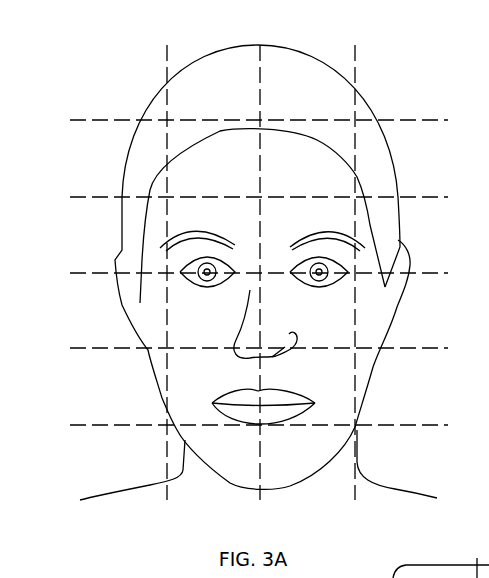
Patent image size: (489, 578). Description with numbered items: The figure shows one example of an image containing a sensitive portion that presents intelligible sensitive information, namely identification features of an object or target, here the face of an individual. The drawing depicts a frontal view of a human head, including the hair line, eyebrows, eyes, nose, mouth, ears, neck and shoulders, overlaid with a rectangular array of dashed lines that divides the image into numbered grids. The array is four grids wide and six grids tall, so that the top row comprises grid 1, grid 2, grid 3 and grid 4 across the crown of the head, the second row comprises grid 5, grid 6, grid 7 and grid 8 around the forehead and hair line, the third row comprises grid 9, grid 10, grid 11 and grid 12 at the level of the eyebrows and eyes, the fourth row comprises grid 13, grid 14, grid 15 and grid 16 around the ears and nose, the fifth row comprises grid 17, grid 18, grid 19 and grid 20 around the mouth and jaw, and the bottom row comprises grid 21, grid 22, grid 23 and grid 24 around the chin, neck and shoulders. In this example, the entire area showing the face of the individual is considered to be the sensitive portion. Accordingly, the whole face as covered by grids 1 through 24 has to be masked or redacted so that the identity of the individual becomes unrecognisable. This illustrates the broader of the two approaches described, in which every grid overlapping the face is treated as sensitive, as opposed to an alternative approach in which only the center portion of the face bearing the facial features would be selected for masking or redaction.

The grid 1 is at (118, 82).
The grid 2 is at (213, 82).
The grid 3 is at (307, 82).
The grid 4 is at (401, 82).
The grid 5 is at (118, 158).
The grid 6 is at (213, 158).
The grid 7 is at (307, 158).
The grid 8 is at (401, 158).
The grid 9 is at (118, 235).
The grid 10 is at (213, 235).
The grid 11 is at (307, 235).
The grid 12 is at (401, 235).
The grid 13 is at (118, 310).
The grid 14 is at (213, 310).
The grid 15 is at (307, 310).
The grid 16 is at (401, 310).
The grid 17 is at (118, 386).
The grid 18 is at (213, 386).
The grid 19 is at (307, 386).
The grid 20 is at (401, 386).
The grid 21 is at (118, 462).
The grid 22 is at (213, 462).
The grid 23 is at (307, 462).
The grid 24 is at (401, 462).